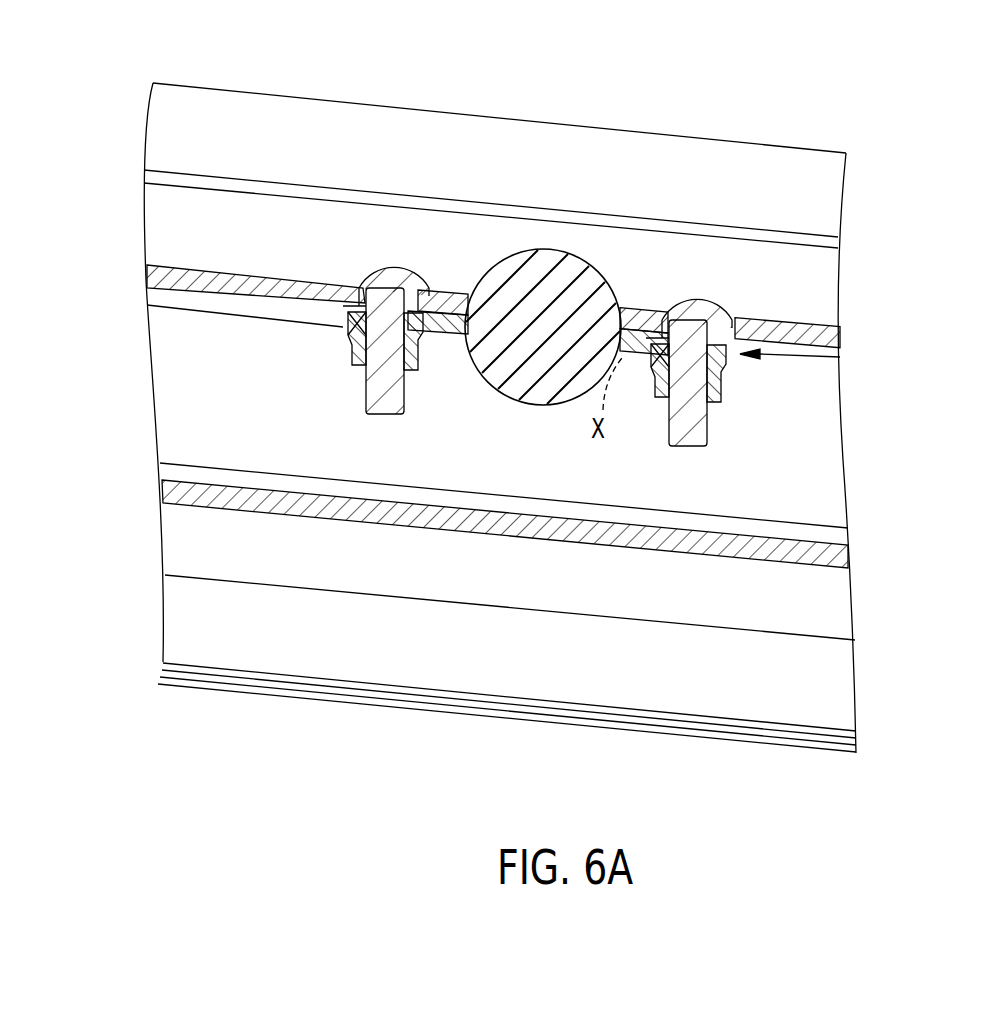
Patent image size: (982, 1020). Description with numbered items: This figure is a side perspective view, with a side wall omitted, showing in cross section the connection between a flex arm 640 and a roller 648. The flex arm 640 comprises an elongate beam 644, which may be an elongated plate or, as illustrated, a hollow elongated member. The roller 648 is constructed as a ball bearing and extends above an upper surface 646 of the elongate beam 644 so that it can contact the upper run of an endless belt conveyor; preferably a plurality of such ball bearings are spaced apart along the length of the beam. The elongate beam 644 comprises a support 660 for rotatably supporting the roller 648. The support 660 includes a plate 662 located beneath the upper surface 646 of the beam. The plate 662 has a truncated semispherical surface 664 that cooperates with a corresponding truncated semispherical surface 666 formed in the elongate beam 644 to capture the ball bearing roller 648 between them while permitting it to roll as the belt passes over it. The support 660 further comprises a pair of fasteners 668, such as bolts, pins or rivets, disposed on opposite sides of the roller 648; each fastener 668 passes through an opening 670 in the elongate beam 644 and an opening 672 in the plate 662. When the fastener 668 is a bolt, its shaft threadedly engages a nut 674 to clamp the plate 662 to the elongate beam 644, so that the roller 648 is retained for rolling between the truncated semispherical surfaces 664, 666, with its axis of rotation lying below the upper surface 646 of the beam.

The flex arm 640 is at (870, 392).
The elongate beam 644 is at (870, 440).
The upper surface 646 is at (277, 266).
The roller 648 is at (560, 272).
The support 660 is at (264, 360).
The plate 662 is at (838, 330).
The truncated semispherical surface 664 is at (463, 340).
The truncated semispherical surface 666 is at (697, 302).
The fastener 668 is at (382, 397).
The opening 670 is at (343, 310).
The opening 672 is at (343, 312).
The nut 674 is at (352, 362).